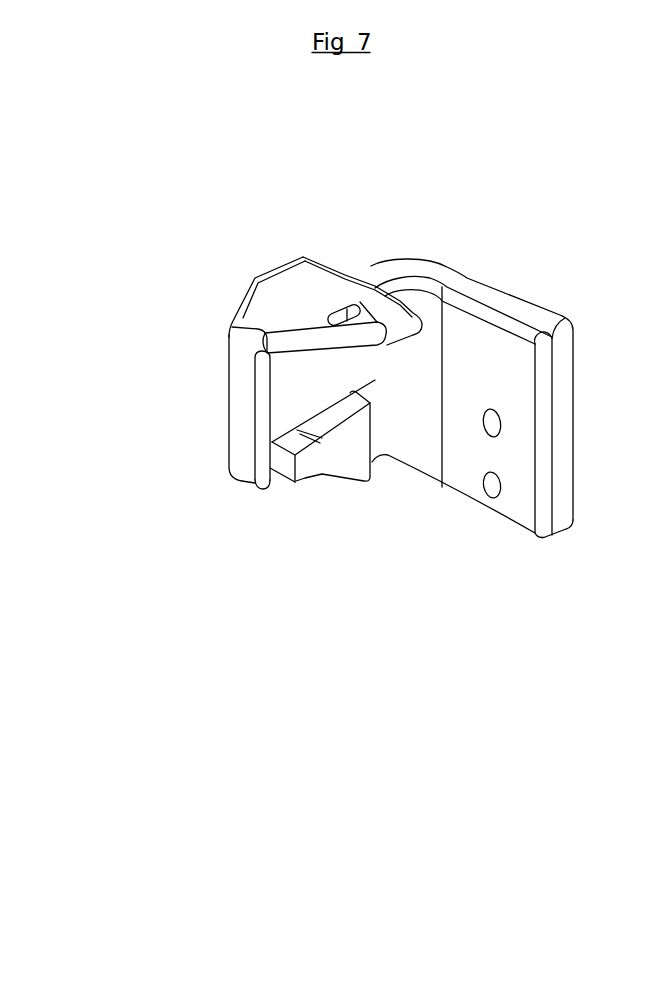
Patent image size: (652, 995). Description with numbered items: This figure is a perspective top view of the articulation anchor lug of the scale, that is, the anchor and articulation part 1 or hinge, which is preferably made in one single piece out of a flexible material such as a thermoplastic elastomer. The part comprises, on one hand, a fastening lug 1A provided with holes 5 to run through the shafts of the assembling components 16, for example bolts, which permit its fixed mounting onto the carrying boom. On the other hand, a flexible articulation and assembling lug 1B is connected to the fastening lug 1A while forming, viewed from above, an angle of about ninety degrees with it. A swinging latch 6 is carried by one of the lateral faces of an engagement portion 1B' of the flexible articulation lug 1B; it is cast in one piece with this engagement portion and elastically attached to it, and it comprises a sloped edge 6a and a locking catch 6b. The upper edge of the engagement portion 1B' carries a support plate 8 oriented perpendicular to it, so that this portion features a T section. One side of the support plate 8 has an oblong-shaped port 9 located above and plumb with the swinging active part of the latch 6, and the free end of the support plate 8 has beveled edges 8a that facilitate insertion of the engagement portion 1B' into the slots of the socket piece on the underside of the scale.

The anchor and articulation part 1 is at (428, 268).
The fastening lug 1A is at (515, 465).
The flexible articulation and assembling lug 1B is at (453, 511).
The engagement portion 1B' is at (205, 408).
The holes 5 is at (500, 417).
The swinging latch 6 is at (353, 448).
The sloped edge 6a is at (338, 413).
The locking catch 6b is at (373, 382).
The support plate 8 is at (278, 305).
The beveled edges 8a is at (307, 345).
The oblong-shaped port 9 is at (352, 308).
The assembling components 16 is at (297, 432).